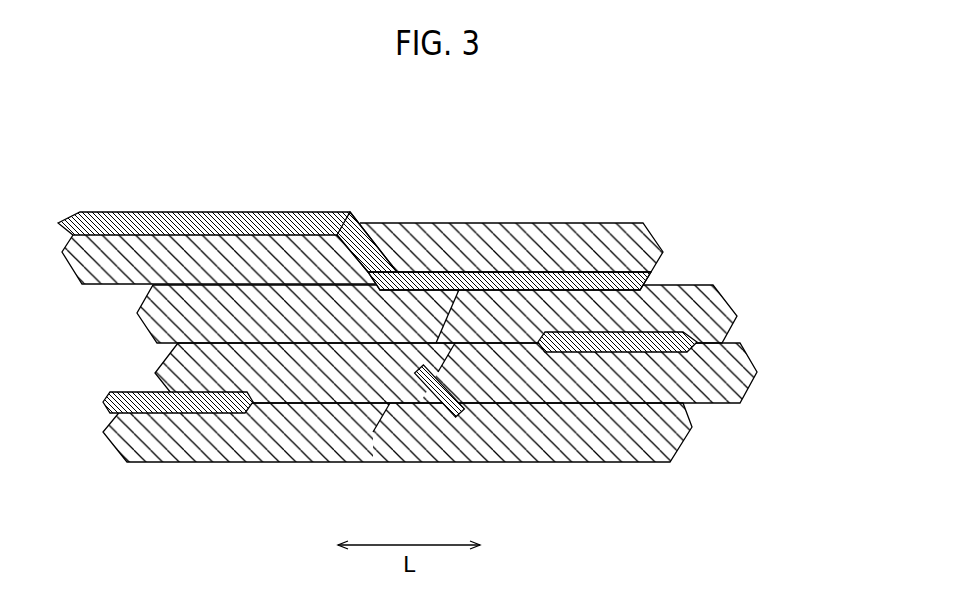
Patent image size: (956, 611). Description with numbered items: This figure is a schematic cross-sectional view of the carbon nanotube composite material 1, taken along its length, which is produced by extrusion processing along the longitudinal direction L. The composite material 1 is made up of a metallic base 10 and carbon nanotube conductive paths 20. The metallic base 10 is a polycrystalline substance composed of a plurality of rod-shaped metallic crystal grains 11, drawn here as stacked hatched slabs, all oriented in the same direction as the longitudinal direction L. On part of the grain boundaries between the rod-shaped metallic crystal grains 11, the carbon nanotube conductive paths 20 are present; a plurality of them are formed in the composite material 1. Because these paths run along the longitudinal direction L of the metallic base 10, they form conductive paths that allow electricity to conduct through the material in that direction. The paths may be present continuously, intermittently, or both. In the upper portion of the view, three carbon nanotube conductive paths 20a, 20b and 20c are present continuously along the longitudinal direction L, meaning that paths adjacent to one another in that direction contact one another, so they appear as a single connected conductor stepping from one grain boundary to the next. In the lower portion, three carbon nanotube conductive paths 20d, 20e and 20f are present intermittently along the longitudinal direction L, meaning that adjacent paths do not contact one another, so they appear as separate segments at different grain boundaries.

The carbon nanotube composite material 1 is at (455, 304).
The metallic base 10 is at (457, 342).
The rod-shaped metallic crystal grains 11 is at (665, 252).
The carbon nanotube conductive paths 20 is at (420, 327).
The carbon nanotube conductive path 20a is at (232, 213).
The carbon nanotube conductive path 20b is at (372, 226).
The carbon nanotube conductive path 20c is at (517, 272).
The carbon nanotube conductive path 20d is at (180, 415).
The carbon nanotube conductive path 20e is at (440, 413).
The carbon nanotube conductive path 20f is at (662, 355).